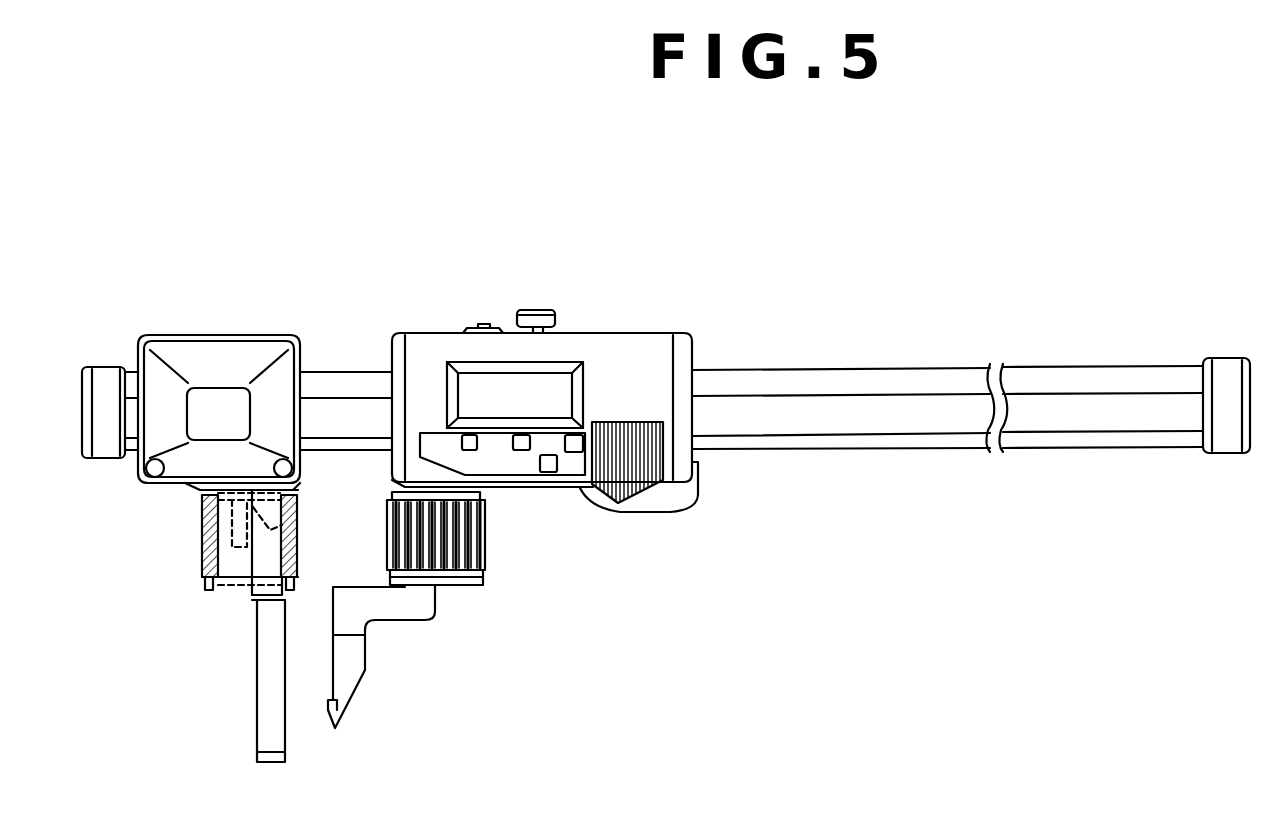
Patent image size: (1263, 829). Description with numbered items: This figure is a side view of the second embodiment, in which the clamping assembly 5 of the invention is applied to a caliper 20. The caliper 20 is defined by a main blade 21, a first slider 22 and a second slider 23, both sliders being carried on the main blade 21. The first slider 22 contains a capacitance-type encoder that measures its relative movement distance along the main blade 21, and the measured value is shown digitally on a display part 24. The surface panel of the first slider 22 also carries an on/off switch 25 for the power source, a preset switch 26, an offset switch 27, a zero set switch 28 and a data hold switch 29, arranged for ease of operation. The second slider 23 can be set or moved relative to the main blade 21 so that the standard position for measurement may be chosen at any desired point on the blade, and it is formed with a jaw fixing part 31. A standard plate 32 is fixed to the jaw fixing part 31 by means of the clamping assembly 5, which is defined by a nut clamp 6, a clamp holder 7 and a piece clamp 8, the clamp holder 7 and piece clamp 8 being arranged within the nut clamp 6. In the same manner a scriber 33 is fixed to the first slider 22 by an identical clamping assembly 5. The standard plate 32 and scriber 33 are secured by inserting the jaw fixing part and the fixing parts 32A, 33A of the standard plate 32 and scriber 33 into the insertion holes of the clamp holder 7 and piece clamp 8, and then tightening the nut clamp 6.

The caliper 20 is at (811, 283).
The main blade 21 is at (930, 372).
The first slider 22 is at (648, 338).
The second slider 23 is at (217, 350).
The display part 24 is at (557, 380).
The on/off switch 25 is at (548, 474).
The preset switch 26 is at (470, 452).
The offset switch 27 is at (522, 452).
The zero set switch 28 is at (575, 453).
The data hold switch 29 is at (482, 323).
The clamping assembly 5 is at (133, 492).
The nut clamp 6 is at (202, 580).
The clamp holder 7 is at (200, 513).
The piece clamp 8 is at (203, 570).
The jaw fixing part 31 is at (233, 568).
The standard plate 32 is at (270, 725).
The fixing part of standard plate 32A is at (260, 565).
The scriber 33 is at (355, 667).
The fixing part of scriber 33A is at (428, 603).